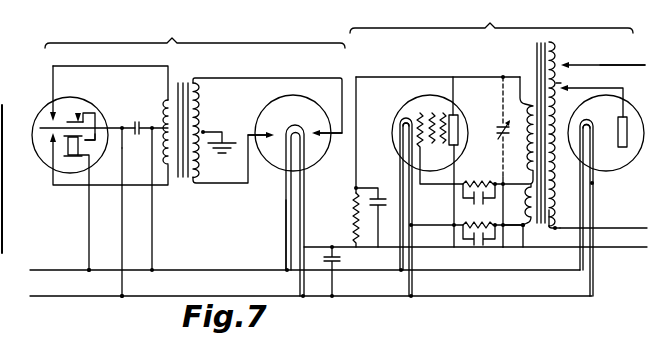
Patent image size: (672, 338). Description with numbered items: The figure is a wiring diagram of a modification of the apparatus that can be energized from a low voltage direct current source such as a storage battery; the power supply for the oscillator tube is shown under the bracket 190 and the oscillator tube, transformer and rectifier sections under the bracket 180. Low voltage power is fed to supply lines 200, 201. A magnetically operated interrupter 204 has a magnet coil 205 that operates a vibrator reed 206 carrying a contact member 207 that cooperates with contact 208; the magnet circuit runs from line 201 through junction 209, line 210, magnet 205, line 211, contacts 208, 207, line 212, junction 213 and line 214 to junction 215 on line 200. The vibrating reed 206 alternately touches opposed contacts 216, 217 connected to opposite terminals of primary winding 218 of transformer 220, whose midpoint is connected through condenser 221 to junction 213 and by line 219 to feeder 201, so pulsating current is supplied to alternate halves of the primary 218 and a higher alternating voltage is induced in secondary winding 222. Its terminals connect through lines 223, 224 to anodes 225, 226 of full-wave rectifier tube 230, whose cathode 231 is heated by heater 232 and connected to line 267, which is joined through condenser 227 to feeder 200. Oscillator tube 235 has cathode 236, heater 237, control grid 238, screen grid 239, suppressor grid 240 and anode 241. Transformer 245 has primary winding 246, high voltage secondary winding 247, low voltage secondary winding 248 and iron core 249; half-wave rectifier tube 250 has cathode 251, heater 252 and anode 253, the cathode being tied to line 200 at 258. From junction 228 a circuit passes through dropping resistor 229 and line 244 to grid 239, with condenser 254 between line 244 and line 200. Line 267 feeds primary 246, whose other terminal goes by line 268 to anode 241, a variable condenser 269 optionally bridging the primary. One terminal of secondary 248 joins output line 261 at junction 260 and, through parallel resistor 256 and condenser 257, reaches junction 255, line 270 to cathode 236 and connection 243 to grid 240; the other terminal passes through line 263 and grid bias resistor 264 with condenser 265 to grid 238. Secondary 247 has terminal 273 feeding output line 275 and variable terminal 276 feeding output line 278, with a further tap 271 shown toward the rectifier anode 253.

The bracket 180 is at (491, 21).
The bracket 190 is at (195, 35).
The supply line 200 is at (80, 283).
The supply line 201 is at (62, 270).
The magnetically operated interrupter 204 is at (31, 141).
The magnet coil 205 is at (53, 180).
The vibrator reed 206 is at (48, 128).
The contact member 207 is at (88, 113).
The contact 208 is at (78, 110).
The junction 209 is at (89, 270).
The line 210 is at (89, 222).
The line 211 is at (97, 141).
The line 212 is at (122, 147).
The junction 213 is at (122, 128).
The line 214 is at (122, 218).
The junction 215 is at (123, 296).
The contact 216 is at (51, 111).
The contact 217 is at (50, 142).
The primary winding 218 is at (165, 160).
The line 219 is at (153, 245).
The transformer 220 is at (183, 186).
The condenser 221 is at (137, 122).
The secondary winding 222 is at (205, 113).
The line 223 is at (243, 78).
The line 224 is at (222, 184).
The anode 225 is at (320, 137).
The anode 226 is at (270, 132).
The condenser 227 is at (340, 256).
The junction 228 is at (322, 232).
The dropping resistor 229 is at (354, 195).
The full-wave rectifier tube 230 is at (308, 99).
The cathode 231 is at (305, 142).
The heater 232 is at (286, 219).
The oscillator tube 235 is at (464, 101).
The cathode 236 is at (401, 115).
The heater 237 is at (399, 138).
The control grid 238 is at (420, 113).
The screen grid 239 is at (432, 113).
The suppressor grid 240 is at (443, 113).
The anode 241 is at (459, 118).
The connection 243 is at (460, 145).
The line 244 is at (356, 127).
The transformer 245 is at (567, 49).
The primary winding 246 is at (522, 98).
The high voltage secondary winding 247 is at (562, 83).
The low voltage secondary winding 248 is at (519, 245).
The iron core 249 is at (548, 229).
The half-wave rectifier tube 250 is at (635, 104).
The cathode 251 is at (596, 153).
The heater 252 is at (589, 126).
The anode 253 is at (627, 141).
The condenser 254 is at (384, 196).
The junction 255 is at (453, 231).
The voltage regulating resistor 256 is at (483, 226).
The voltage regulating condenser 257 is at (517, 227).
The connection 258 is at (593, 183).
The junction 260 is at (531, 227).
The output line 261 is at (628, 247).
The line 263 is at (518, 205).
The grid bias resistor 264 is at (466, 182).
The grid bias condenser 265 is at (475, 186).
The line 267 is at (403, 233).
The line 268 is at (476, 76).
The variable condenser 269 is at (497, 130).
The line 270 is at (425, 225).
The tap 271 is at (591, 101).
The output terminal 273 is at (556, 226).
The output line 275 is at (627, 228).
The output terminal 276 is at (603, 57).
The output line 278 is at (631, 65).